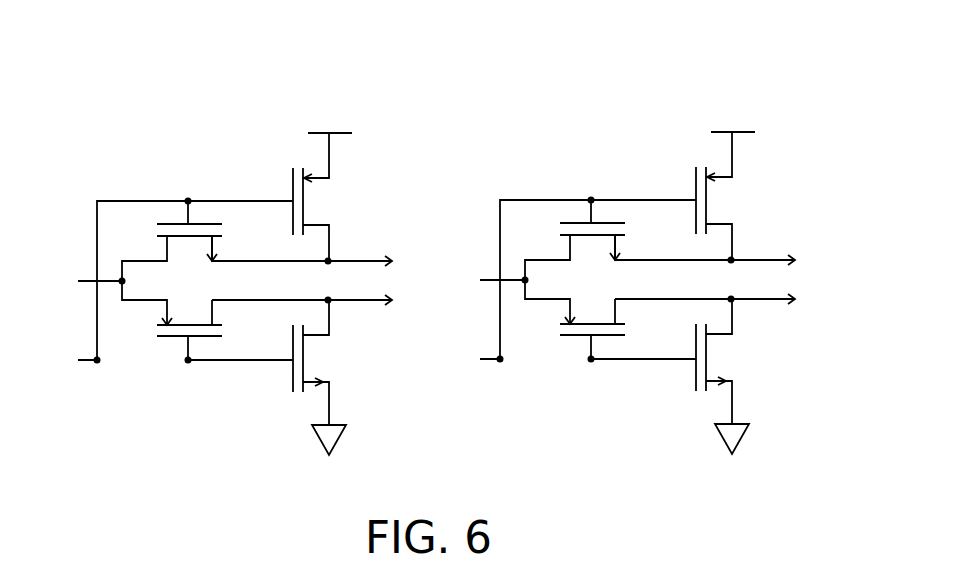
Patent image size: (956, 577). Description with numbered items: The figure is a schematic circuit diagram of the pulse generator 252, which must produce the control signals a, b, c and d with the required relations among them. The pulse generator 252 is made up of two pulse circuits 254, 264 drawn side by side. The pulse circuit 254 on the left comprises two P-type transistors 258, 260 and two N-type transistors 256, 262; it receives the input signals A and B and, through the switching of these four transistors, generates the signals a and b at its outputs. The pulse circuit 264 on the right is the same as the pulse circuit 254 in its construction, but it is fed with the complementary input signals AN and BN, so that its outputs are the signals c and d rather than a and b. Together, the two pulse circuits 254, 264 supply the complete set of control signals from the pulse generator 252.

The pulse generator 252 is at (132, 98).
The pulse circuit 254 is at (362, 77).
The N-type transistor 256 is at (210, 221).
The P-type transistor 258 is at (210, 340).
The P-type transistor 260 is at (305, 207).
The N-type transistor 262 is at (307, 353).
The pulse circuit 264 is at (636, 229).